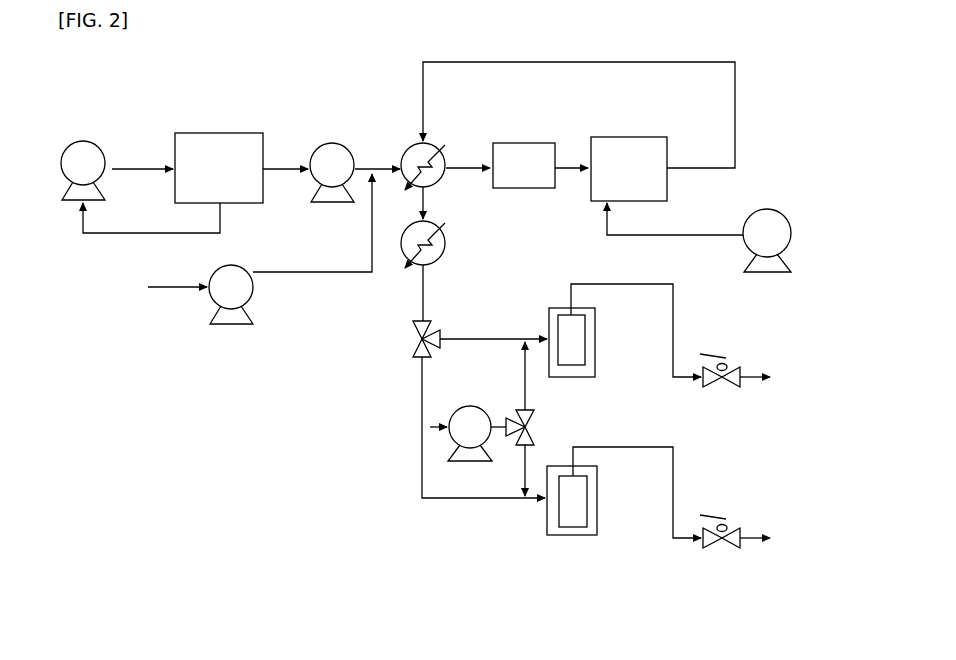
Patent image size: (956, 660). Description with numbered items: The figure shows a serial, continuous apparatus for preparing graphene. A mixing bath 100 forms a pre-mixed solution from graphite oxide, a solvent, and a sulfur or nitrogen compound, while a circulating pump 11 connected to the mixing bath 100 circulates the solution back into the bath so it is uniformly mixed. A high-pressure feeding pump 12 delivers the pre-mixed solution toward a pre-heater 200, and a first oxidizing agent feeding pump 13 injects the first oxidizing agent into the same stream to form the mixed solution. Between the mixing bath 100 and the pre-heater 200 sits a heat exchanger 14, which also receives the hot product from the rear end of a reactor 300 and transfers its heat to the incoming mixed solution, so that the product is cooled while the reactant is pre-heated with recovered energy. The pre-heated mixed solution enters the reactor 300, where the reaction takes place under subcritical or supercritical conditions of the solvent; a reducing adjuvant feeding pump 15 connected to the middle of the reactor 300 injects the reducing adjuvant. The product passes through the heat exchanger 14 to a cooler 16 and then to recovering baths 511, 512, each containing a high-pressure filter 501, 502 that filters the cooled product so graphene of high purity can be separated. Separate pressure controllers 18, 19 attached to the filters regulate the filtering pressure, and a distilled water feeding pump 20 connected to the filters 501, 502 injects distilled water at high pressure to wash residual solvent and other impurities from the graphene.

The circulating pump 11 is at (88, 142).
The mixing bath 100 is at (225, 133).
The high-pressure feeding pump 12 is at (334, 143).
The first oxidizing agent feeding pump 13 is at (235, 265).
The heat exchanger 14 is at (434, 144).
The cooler 16 is at (446, 248).
The pre-heater 200 is at (524, 143).
The reactor 300 is at (648, 137).
The reducing adjuvant feeding pump 15 is at (778, 210).
The distilled water feeding pump 20 is at (453, 408).
The filter 501 is at (586, 343).
The recovering bath 511 is at (596, 372).
The filter 502 is at (588, 500).
The recovering bath 512 is at (598, 530).
The pressure controller 18 is at (716, 353).
The pressure controller 19 is at (718, 514).